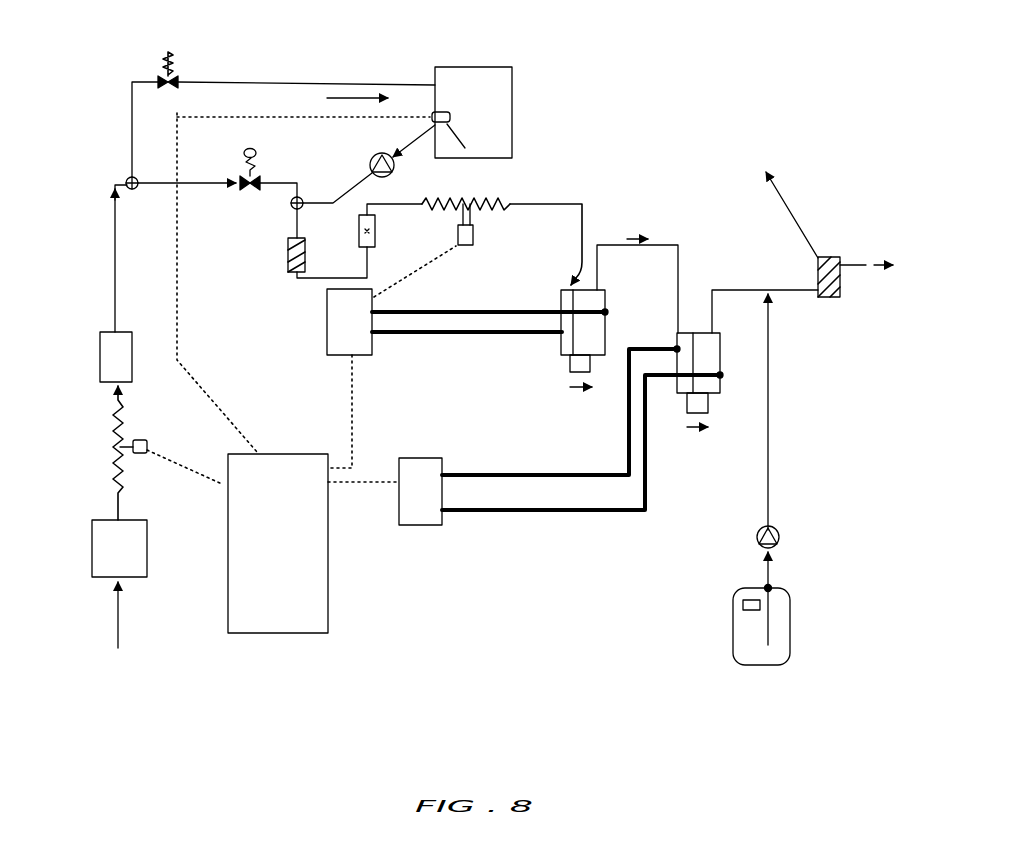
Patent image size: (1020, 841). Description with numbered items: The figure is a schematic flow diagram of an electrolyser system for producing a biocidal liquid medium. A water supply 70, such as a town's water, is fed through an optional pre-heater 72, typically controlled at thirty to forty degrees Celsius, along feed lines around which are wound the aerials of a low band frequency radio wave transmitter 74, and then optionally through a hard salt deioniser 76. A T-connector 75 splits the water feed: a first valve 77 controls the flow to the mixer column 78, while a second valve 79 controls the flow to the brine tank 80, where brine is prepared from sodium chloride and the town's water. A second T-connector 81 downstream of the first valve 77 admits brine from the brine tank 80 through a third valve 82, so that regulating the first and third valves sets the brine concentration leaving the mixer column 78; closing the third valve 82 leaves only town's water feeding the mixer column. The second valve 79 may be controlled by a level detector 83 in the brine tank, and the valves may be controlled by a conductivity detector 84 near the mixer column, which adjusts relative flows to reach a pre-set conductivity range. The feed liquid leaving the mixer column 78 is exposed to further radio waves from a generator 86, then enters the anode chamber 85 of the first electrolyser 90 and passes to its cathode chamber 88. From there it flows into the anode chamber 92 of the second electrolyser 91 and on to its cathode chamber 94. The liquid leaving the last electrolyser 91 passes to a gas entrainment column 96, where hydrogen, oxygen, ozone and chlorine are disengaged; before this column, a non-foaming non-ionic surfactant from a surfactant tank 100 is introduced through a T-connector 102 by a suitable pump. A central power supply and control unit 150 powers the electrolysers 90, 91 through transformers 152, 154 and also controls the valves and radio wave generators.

The water supply 70 is at (117, 627).
The pre-heater 72 is at (100, 554).
The low band frequency radio wave transmitter 74 is at (152, 453).
The T-connector 75 is at (127, 180).
The hard salt deioniser 76 is at (100, 362).
The first valve 77 is at (217, 170).
The mixer column 78 is at (327, 243).
The second valve 79 is at (176, 50).
The brine tank 80 is at (344, 112).
The second T-connector 81 is at (285, 209).
The third valve 82 is at (372, 156).
The level detector 83 is at (372, 99).
The conductivity detector 84 is at (378, 236).
The anode chamber 85 is at (567, 351).
The generator 86 is at (475, 232).
The cathode chamber 88 is at (608, 332).
The first electrolyser 90 is at (560, 301).
The second electrolyser 91 is at (733, 405).
The anode chamber 92 is at (698, 347).
The cathode chamber 94 is at (765, 410).
The dispensing nozzle 96 is at (838, 252).
The surfactant tank 100 is at (731, 641).
The T-connector 102 is at (781, 534).
The central power supply and control unit 150 is at (287, 373).
The transformer 152 is at (388, 367).
The transformer 154 is at (432, 543).